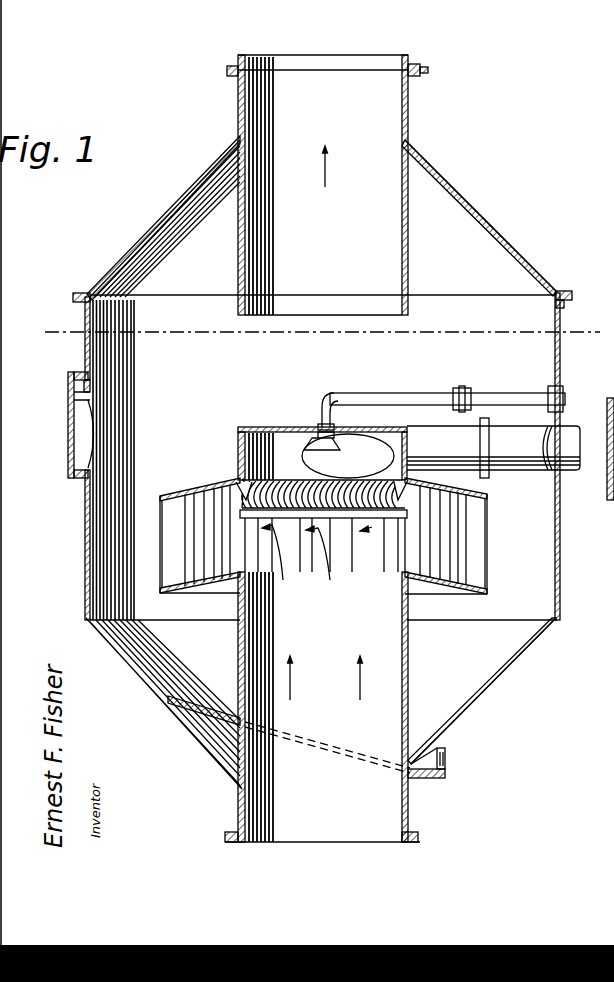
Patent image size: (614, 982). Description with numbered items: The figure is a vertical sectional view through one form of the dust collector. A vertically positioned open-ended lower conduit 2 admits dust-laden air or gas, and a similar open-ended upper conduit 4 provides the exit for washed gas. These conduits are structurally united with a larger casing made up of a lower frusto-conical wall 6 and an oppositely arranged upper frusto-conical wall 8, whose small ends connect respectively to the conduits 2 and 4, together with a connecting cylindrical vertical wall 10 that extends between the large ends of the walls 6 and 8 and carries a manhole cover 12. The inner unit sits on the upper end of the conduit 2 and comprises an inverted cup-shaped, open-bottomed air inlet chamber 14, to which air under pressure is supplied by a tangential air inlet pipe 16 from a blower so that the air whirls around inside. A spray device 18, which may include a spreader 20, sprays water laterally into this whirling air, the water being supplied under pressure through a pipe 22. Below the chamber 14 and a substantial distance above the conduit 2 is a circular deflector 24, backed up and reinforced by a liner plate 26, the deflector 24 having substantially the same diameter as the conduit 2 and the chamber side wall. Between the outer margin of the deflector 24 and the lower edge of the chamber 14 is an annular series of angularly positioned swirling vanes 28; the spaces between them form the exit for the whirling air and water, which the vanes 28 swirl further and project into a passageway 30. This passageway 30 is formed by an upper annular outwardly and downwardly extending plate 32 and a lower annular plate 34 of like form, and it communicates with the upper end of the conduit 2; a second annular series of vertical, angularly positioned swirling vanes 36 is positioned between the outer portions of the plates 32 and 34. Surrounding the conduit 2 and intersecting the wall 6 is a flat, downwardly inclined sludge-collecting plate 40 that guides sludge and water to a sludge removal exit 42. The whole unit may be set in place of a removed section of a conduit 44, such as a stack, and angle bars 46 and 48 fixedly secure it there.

The lower conduit 2 is at (52, 360).
The upper conduit 4 is at (403, 88).
The lower frusto-conical wall 6 is at (508, 668).
The upper frusto-conical wall 8 is at (475, 200).
The cylindrical vertical wall 10 is at (560, 508).
The manhole cover 12 is at (68, 428).
The air inlet chamber 14 is at (288, 427).
The tangential air inlet pipe 16 is at (493, 448).
The spray device 18 is at (314, 440).
The spreader 20 is at (348, 456).
The water supply pipe 22 is at (352, 398).
The circular deflector 24 is at (281, 568).
The liner plate 26 is at (339, 569).
The swirling vanes 28 is at (240, 495).
The passageway 30 is at (206, 490).
The upper annular plate 32 is at (186, 490).
The lower annular plate 34 is at (178, 590).
The second swirling vanes 36 is at (175, 516).
The sludge-collecting plate 40 is at (228, 704).
The sludge removal exit 42 is at (425, 775).
The conduit 44 is at (404, 66).
The angle bar 46 is at (428, 66).
The angle bar 48 is at (414, 836).